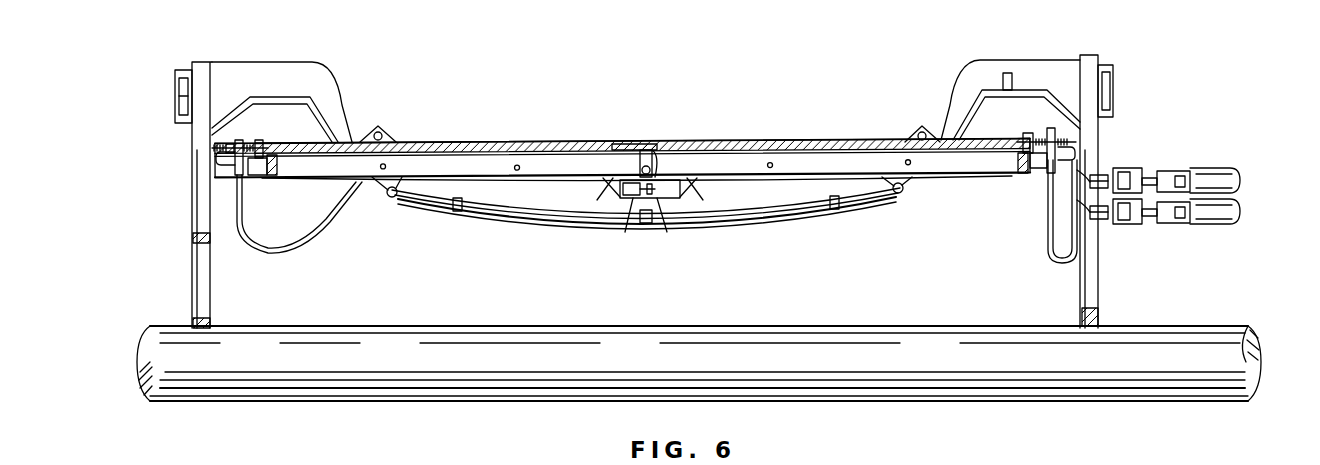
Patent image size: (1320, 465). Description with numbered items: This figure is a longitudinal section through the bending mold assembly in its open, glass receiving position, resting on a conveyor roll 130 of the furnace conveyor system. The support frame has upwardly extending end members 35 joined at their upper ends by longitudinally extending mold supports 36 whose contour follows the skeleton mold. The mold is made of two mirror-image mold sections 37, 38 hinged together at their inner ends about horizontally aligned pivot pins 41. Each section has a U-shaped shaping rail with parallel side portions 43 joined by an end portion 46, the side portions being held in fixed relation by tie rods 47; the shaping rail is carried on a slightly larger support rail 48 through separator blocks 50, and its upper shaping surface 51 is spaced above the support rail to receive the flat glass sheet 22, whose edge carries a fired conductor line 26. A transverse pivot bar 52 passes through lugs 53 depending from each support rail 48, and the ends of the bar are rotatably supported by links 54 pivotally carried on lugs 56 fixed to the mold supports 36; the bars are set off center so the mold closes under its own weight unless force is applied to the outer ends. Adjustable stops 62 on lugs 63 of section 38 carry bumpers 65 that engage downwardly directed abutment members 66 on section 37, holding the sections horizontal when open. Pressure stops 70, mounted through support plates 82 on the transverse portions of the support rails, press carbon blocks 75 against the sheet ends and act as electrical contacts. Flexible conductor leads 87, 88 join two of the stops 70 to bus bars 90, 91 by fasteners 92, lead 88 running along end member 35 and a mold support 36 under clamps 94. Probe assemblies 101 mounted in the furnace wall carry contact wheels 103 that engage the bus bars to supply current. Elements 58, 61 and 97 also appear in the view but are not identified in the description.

The glass sheet 22 is at (522, 146).
The conductor line 26 is at (565, 148).
The end member 35 is at (200, 243).
The mold support 36 is at (332, 85).
The mold section 37 is at (752, 190).
The mold section 38 is at (487, 190).
The pivot pin 41 is at (650, 170).
The side portion 43 is at (468, 160).
The end portion 46 is at (280, 177).
The tie rod 47 is at (772, 176).
The support rail 48 is at (240, 202).
The separator block 50 is at (257, 176).
The upper shaping surface 51 is at (300, 172).
The pivot bar 52 is at (388, 197).
The lug 53 is at (387, 195).
The link 54 is at (388, 133).
The lug 56 is at (378, 130).
The hinge plate 58 is at (628, 147).
The hinge 61 is at (665, 150).
The adjustable stop 62 is at (638, 198).
The lug 63 is at (617, 183).
The bumper 65 is at (650, 198).
The abutment member 66 is at (667, 192).
The pressure stop 70 is at (262, 128).
The carbon block 75 is at (262, 140).
The support plate 82 is at (232, 172).
The conductor lead 87 is at (1046, 250).
The conductor lead 88 is at (1105, 140).
The bus bar 90 is at (1108, 220).
The bus bar 91 is at (1110, 178).
The fastener 92 is at (1085, 212).
The clamp 94 is at (1005, 72).
The connector 97 is at (1120, 168).
The probe assembly 101 is at (1243, 150).
The contact wheel 103 is at (1135, 183).
The conveyor roll 130 is at (1195, 385).